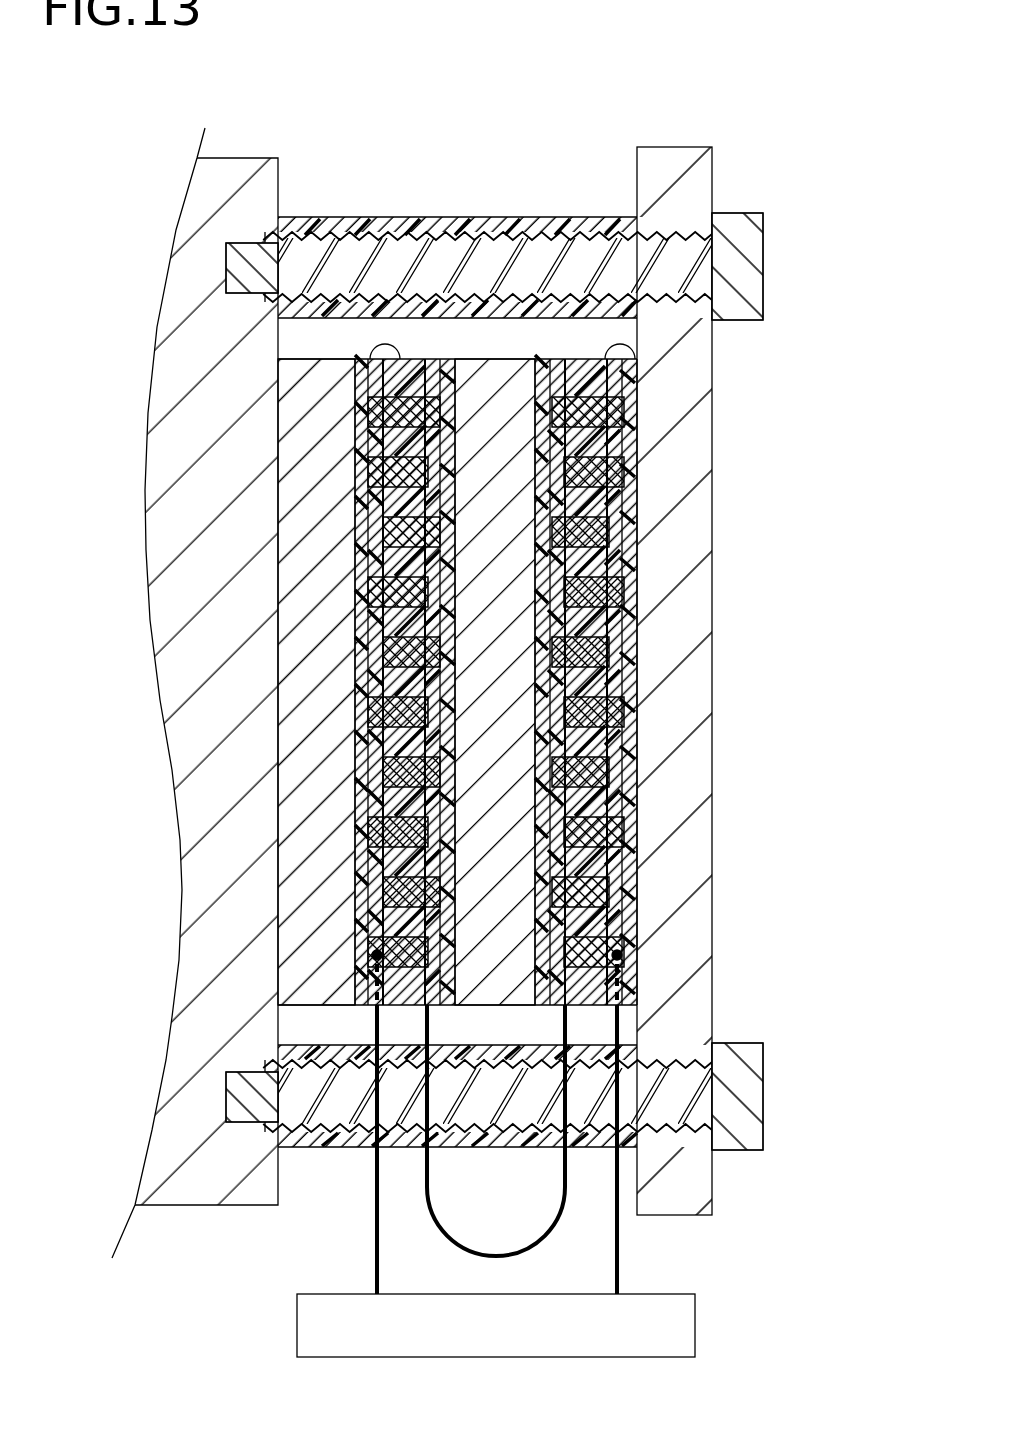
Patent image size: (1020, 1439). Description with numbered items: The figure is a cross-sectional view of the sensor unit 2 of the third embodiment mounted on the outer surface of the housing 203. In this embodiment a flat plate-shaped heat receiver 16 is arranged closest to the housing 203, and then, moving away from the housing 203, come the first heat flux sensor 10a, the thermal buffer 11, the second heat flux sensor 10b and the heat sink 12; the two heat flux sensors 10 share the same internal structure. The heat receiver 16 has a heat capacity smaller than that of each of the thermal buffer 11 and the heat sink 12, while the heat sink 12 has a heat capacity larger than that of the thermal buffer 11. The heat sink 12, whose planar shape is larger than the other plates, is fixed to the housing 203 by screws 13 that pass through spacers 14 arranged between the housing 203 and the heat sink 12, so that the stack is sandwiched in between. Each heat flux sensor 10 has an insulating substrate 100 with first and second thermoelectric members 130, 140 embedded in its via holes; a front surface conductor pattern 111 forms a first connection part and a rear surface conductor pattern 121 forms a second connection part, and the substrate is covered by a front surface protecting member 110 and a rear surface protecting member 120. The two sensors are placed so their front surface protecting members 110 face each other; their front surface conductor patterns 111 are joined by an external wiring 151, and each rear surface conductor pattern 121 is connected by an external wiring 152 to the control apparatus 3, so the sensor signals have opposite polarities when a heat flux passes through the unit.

The sensor unit 2 is at (698, 82).
The control apparatus 3 is at (680, 1327).
The heat flux sensor 10 is at (412, 360).
The first heat flux sensor 10a is at (372, 377).
The second heat flux sensor 10b is at (603, 358).
The thermal buffer 11 is at (500, 373).
The heat sink 12 is at (667, 192).
The screw 13 is at (733, 312).
The spacer 14 is at (620, 226).
The heat receiver 16 is at (325, 373).
The insulating substrate 100 is at (357, 615).
The front surface protecting member 110 is at (430, 503).
The front surface conductor pattern 111 is at (380, 906).
The rear surface protecting member 120 is at (372, 558).
The rear surface conductor pattern 121 is at (376, 948).
The first thermoelectric member 130 is at (378, 853).
The second thermoelectric member 140 is at (432, 908).
The external wiring 151 is at (432, 1222).
The external wiring 152 is at (376, 1272).
The housing 203 is at (257, 192).